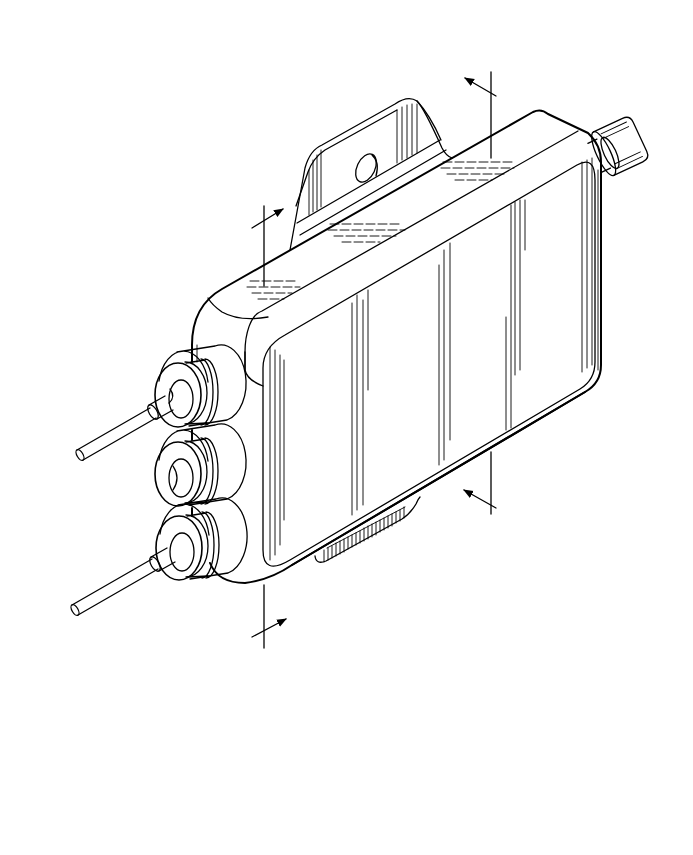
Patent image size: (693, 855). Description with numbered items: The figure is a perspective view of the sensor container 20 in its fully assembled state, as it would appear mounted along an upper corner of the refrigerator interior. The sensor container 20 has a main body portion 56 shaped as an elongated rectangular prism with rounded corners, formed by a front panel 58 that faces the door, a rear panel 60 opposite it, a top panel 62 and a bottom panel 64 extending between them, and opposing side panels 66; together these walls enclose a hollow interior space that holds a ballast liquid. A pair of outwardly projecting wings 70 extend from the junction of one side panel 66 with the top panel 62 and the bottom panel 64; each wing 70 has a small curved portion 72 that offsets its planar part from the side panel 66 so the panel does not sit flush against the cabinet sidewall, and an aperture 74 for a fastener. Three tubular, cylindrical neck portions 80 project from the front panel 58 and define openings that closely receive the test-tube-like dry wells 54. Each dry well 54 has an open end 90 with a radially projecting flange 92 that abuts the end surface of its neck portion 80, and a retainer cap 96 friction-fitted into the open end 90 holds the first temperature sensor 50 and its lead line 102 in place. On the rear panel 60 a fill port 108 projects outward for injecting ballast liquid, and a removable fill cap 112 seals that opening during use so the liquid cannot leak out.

The sensor container 20 is at (114, 187).
The first temperature sensor 50 is at (162, 426).
The dry well 54 is at (150, 398).
The main body portion 56 is at (207, 291).
The front panel 58 is at (248, 416).
The rear panel 60 is at (607, 293).
The top panel 62 is at (241, 279).
The bottom panel 64 is at (536, 423).
The side panel 66 is at (458, 318).
The wing 70 is at (319, 163).
The curved portion 72 is at (446, 150).
The aperture 74 is at (368, 153).
The neck portion 80 is at (188, 360).
The open end 90 is at (155, 475).
The flange 92 is at (164, 378).
The retainer cap 96 is at (167, 384).
The lead line 102 is at (83, 444).
The fill port 108 is at (607, 179).
The fill cap 112 is at (648, 141).